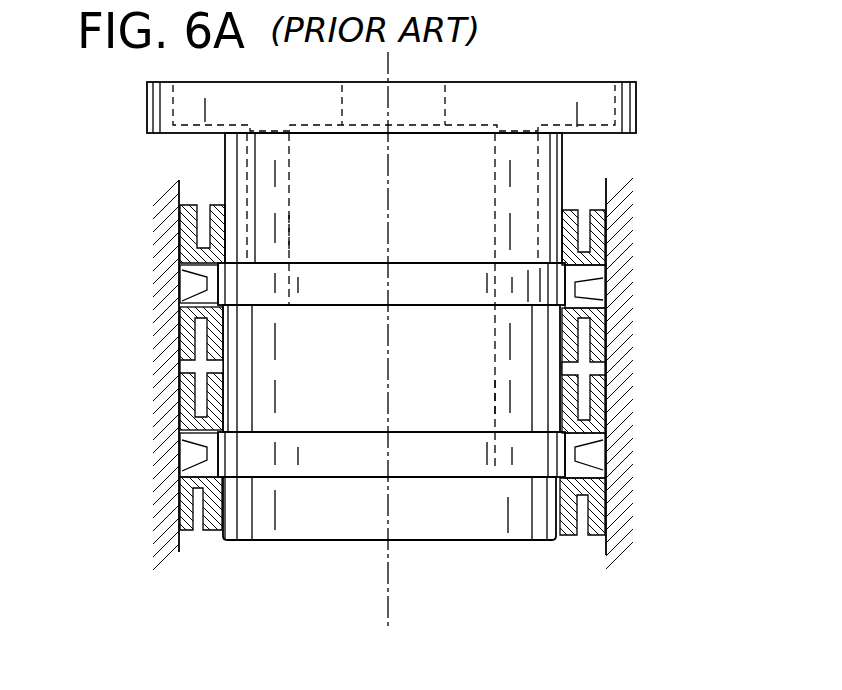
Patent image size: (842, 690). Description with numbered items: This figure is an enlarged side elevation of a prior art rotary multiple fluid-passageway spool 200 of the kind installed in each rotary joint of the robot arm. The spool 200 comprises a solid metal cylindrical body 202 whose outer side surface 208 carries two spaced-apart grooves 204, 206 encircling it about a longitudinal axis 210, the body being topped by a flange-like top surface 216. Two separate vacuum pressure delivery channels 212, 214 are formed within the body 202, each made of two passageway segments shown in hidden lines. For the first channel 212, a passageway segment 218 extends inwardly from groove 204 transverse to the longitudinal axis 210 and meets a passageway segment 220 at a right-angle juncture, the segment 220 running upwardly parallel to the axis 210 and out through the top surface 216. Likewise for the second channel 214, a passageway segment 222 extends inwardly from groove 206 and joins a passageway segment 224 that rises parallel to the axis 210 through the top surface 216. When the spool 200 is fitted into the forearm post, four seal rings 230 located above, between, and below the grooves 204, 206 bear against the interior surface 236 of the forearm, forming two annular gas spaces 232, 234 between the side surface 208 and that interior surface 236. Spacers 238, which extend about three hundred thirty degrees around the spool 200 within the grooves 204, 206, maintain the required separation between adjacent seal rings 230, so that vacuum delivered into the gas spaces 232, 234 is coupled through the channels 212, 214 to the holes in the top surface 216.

The rotary multiple fluid-passageway spool 200 is at (138, 540).
The cylindrical body 202 is at (557, 543).
The groove 204 is at (528, 288).
The groove 206 is at (458, 468).
The outer side surface 208 is at (563, 168).
The longitudinal axis 210 is at (383, 615).
The vacuum pressure delivery channel 212 is at (300, 204).
The vacuum pressure delivery channel 214 is at (480, 358).
The top surface 216 is at (410, 83).
The passageway segment 218 is at (252, 288).
The passageway segment 220 is at (267, 250).
The passageway segment 222 is at (250, 455).
The passageway segment 224 is at (493, 407).
The seal rings 230 is at (600, 228).
The annular gas space 232 is at (612, 291).
The annular gas space 234 is at (606, 458).
The interior surface 236 is at (165, 203).
The spacers 238 is at (195, 270).